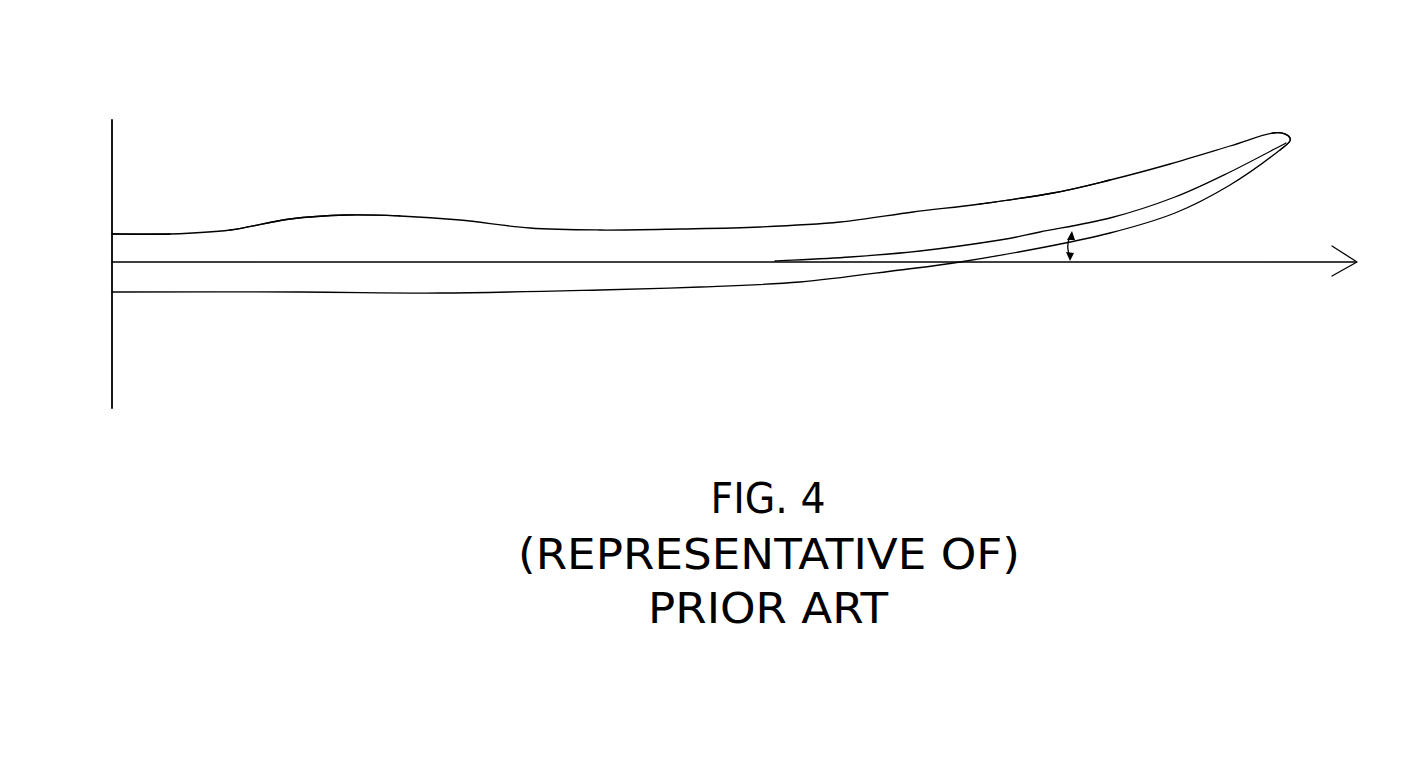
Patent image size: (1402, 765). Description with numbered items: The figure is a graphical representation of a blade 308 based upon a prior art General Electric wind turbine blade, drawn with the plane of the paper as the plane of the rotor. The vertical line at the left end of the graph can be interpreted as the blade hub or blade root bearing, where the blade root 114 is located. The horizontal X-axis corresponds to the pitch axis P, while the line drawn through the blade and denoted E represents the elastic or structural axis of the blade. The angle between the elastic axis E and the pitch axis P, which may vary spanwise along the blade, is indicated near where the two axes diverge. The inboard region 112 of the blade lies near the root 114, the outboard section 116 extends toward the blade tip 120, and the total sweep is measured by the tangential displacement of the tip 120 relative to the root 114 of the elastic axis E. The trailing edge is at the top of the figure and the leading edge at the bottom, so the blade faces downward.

The inboard region 112 is at (255, 227).
The blade root 114 is at (138, 233).
The outboard section 116 is at (1045, 198).
The blade tip 120 is at (1290, 140).
The blade 308 is at (918, 207).
The elastic axis E is at (1175, 197).
The pitch axis P is at (744, 262).